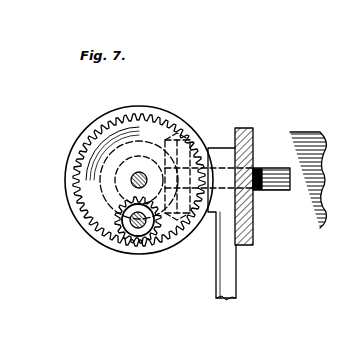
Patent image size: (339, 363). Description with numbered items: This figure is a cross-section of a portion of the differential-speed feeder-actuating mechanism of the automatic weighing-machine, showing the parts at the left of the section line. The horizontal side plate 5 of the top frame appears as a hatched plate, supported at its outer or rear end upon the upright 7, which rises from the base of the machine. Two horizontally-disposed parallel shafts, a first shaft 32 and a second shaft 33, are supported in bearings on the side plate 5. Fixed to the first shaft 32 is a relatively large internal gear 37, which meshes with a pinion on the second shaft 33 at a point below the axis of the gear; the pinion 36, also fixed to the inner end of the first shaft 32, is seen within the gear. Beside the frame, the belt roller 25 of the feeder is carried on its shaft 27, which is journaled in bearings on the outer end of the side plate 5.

The side plate 5 is at (245, 129).
The upright 7 is at (218, 283).
The belt roller 25 is at (315, 133).
The shaft 27 is at (270, 192).
The first shaft 32 is at (142, 176).
The second shaft 33 is at (139, 232).
The pinion 36 is at (121, 236).
The internal gear 37 is at (78, 193).